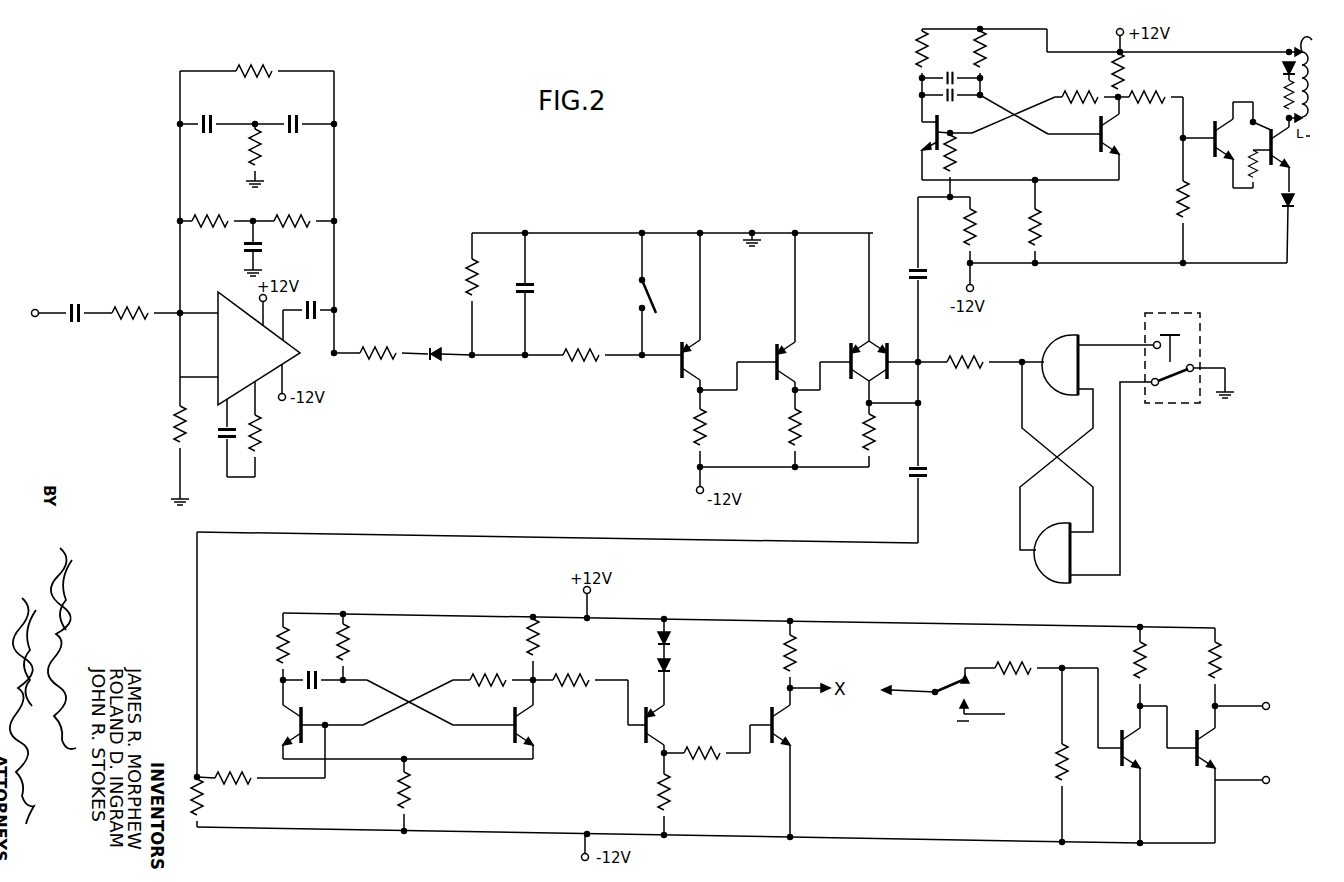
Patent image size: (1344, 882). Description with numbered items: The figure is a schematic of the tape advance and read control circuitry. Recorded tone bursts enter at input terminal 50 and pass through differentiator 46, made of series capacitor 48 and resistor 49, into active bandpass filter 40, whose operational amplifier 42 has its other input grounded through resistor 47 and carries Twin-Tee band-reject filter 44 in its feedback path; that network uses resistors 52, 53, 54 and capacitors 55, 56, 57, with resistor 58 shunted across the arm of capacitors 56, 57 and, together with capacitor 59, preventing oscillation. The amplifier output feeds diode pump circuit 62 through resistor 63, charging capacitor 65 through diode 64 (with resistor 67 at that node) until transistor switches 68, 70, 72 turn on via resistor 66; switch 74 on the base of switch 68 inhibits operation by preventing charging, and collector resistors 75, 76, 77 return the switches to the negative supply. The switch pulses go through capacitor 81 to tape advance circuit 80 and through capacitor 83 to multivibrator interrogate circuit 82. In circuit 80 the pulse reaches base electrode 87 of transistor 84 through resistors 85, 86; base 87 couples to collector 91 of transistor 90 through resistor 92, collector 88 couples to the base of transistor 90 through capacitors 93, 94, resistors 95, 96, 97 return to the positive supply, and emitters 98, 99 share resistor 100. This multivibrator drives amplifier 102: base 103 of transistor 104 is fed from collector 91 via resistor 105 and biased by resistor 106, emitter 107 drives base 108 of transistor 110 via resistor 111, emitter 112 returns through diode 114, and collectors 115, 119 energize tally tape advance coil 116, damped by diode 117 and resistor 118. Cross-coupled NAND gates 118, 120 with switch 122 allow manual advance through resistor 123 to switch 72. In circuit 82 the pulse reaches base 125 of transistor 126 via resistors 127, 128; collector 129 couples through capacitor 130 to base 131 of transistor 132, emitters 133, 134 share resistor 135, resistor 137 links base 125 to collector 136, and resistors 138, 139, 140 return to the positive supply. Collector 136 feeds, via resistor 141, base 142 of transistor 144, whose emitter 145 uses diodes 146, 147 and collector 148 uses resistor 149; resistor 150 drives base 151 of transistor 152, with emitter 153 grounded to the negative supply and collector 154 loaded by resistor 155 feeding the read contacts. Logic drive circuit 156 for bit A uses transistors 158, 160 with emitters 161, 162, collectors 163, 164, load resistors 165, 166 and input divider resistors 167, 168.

The active bandpass filter 40 is at (208, 354).
The operational amplifier 42 is at (255, 353).
The Twin-Tee band-reject filter 44 is at (345, 161).
The differentiator 46 is at (98, 300).
The resistor 47 is at (172, 426).
The capacitor 48 is at (75, 302).
The resistor 49 is at (154, 302).
The input terminal 50 is at (20, 296).
The resistor 52 is at (228, 210).
The resistor 53 is at (316, 210).
The resistor 54 is at (268, 155).
The capacitor 55 is at (243, 244).
The capacitor 56 is at (224, 112).
The capacitor 57 is at (310, 112).
The resistor 58 is at (278, 61).
The capacitor 59 is at (318, 322).
The diode pump circuit 62 is at (522, 226).
The resistor 63 is at (398, 340).
The diode 64 is at (454, 341).
The capacitor 65 is at (530, 283).
The resistor 66 is at (600, 344).
The resistor 67 is at (466, 280).
The transistor switch 68 is at (688, 352).
The transistor switch 70 is at (790, 354).
The transistor switch 72 is at (882, 322).
The switch 74 is at (638, 289).
The collector resistor 75 is at (706, 430).
The collector resistor 76 is at (806, 428).
The collector resistor 77 is at (884, 430).
The tape advance circuit 80 is at (1246, 272).
The capacitor 81 is at (912, 262).
The multivibrator interrogate circuit 82 is at (440, 603).
The capacitor 83 is at (926, 468).
The transistor 84 is at (928, 121).
The resistor 85 is at (958, 155).
The resistor 86 is at (982, 212).
The base electrode 87 is at (956, 122).
The collector electrode 88 is at (918, 82).
The transistor 90 is at (1145, 149).
The collector 91 is at (1120, 108).
The resistor 92 is at (1087, 87).
The capacitor 93 is at (946, 100).
The capacitor 94 is at (960, 64).
The resistor 95 is at (914, 48).
The resistor 96 is at (986, 54).
The resistor 97 is at (1130, 62).
The emitter 98 is at (921, 150).
The emitter 99 is at (1132, 164).
The resistor 100 is at (1044, 212).
The amplifier 102 is at (1248, 102).
The base 103 is at (1194, 132).
The transistor 104 is at (1249, 146).
The resistor 105 is at (1150, 90).
The resistor 106 is at (1187, 210).
The emitter 107 is at (1226, 164).
The base 108 is at (1264, 128).
The transistor 110 is at (1316, 159).
The resistor 111 is at (1268, 178).
The emitter 112 is at (1291, 176).
The diode 114 is at (1310, 212).
The collector 115 is at (1215, 121).
The tally tape advance coil 116 is at (1308, 39).
The diode 117 is at (1284, 62).
The NAND gate 118 is at (1075, 373).
The collector 119 is at (1282, 117).
The NAND gate 120 is at (1068, 561).
The switch 122 is at (1202, 362).
The resistor 123 is at (988, 348).
The base 125 is at (324, 714).
The transistor 126 is at (276, 729).
The resistor 127 is at (214, 768).
The resistor 128 is at (201, 796).
The collector 129 is at (282, 682).
The capacitor 130 is at (326, 655).
The base 131 is at (513, 714).
The transistor 132 is at (566, 735).
The emitter electrode 133 is at (292, 744).
The emitter electrode 134 is at (529, 739).
The resistor 135 is at (412, 789).
The collector electrode 136 is at (534, 700).
The resistor 137 is at (500, 669).
The resistor 138 is at (270, 632).
The resistor 139 is at (339, 632).
The resistor 140 is at (526, 642).
The resistor 141 is at (560, 668).
The base 142 is at (642, 725).
The transistor 144 is at (697, 727).
The emitter electrode 145 is at (660, 700).
The diode 146 is at (670, 668).
The diode 147 is at (670, 638).
The collector electrode 148 is at (658, 754).
The resistor 149 is at (672, 792).
The resistor 150 is at (696, 746).
The base 151 is at (770, 718).
The transistor 152 is at (824, 733).
The emitter electrode 153 is at (784, 752).
The collector electrode 154 is at (786, 704).
The resistor 155 is at (800, 654).
The logic drive circuit 156 is at (976, 616).
The transistor 158 is at (1162, 753).
The transistor 160 is at (1236, 753).
The emitter electrode 161 is at (1138, 769).
The emitter electrode 162 is at (1214, 764).
The collector electrode 163 is at (1142, 706).
The collector electrode 164 is at (1220, 706).
The resistor 165 is at (1146, 658).
The resistor 166 is at (1222, 658).
The resistor 167 is at (998, 658).
The resistor 168 is at (1064, 762).